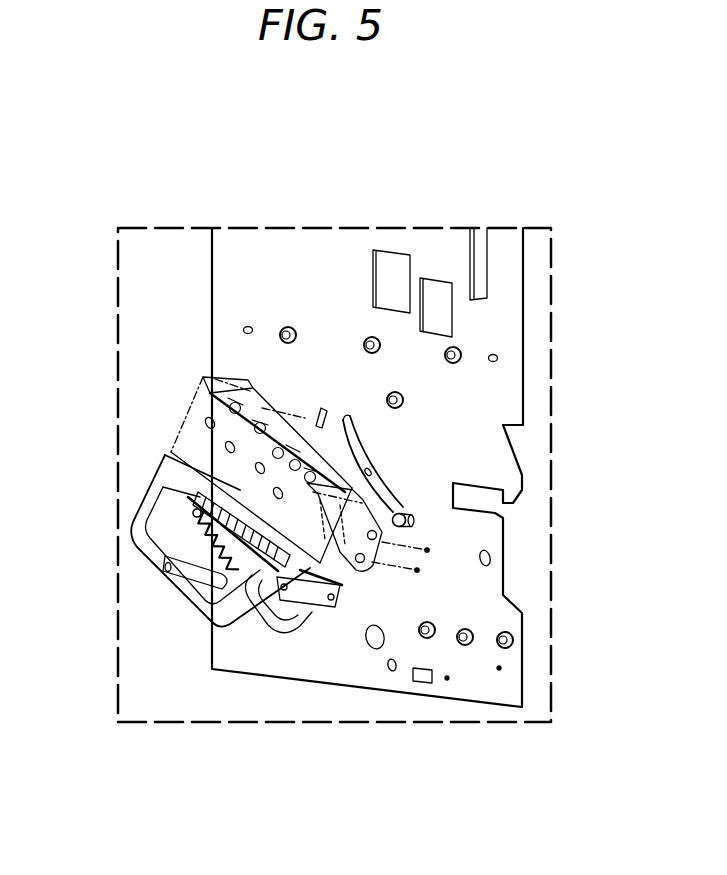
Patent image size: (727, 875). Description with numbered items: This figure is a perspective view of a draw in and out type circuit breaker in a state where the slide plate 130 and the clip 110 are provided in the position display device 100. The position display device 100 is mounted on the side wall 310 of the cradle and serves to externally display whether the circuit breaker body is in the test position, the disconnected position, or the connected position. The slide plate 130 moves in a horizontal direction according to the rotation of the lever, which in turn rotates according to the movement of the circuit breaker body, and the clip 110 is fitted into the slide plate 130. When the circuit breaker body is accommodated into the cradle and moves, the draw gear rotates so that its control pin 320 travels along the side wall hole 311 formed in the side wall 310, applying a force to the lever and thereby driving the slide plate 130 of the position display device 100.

The position display device 100 is at (303, 623).
The clip 110 is at (165, 467).
The slide plate 130 is at (170, 440).
The side wall 310 is at (286, 273).
The side wall hole 311 is at (366, 466).
The control pin 320 is at (413, 520).